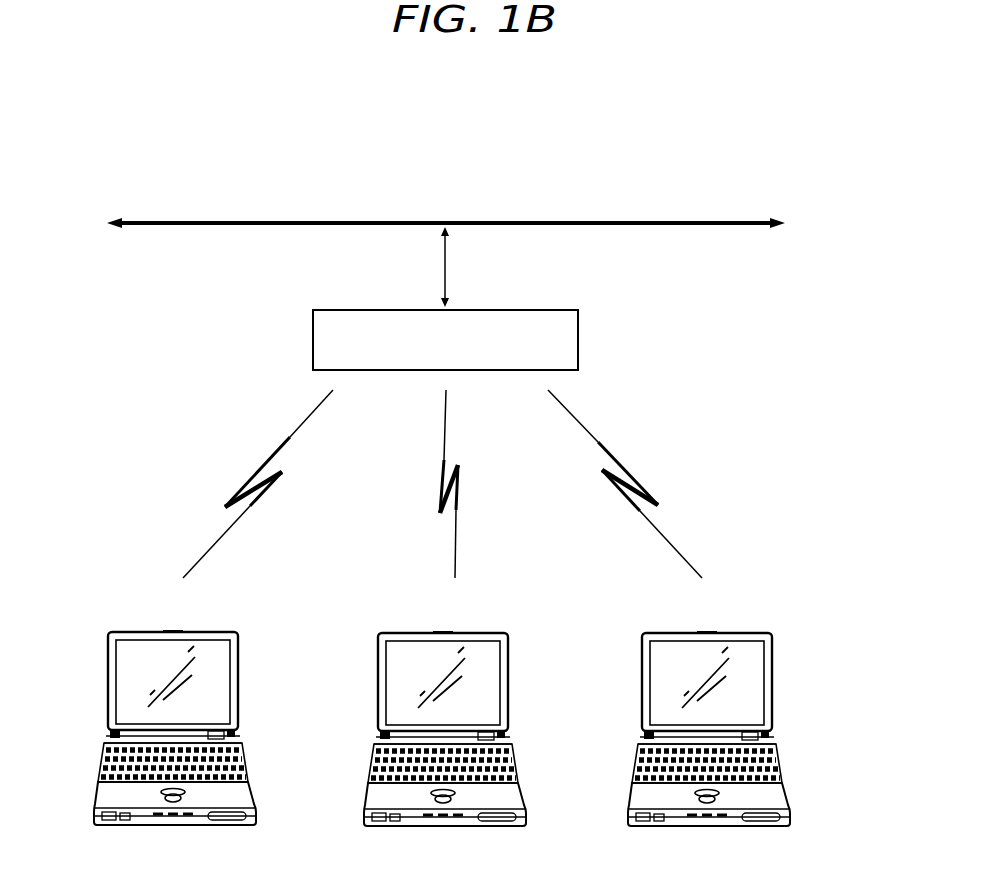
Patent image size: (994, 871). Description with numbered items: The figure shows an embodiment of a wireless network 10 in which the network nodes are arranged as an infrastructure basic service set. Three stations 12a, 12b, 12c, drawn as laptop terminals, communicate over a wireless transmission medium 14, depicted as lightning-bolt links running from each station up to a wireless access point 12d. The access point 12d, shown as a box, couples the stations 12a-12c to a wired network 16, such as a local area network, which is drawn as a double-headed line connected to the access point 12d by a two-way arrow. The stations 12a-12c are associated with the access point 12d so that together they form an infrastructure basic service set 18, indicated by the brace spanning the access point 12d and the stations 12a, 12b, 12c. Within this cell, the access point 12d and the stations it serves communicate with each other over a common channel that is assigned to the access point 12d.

The wireless network 10 is at (657, 118).
The station 12a is at (107, 677).
The station 12b is at (378, 680).
The station 12c is at (642, 680).
The wireless access point 12d is at (578, 340).
The wireless transmission medium 14 is at (598, 440).
The wired network 16 is at (695, 221).
The infrastructure basic service set 18 is at (811, 312).